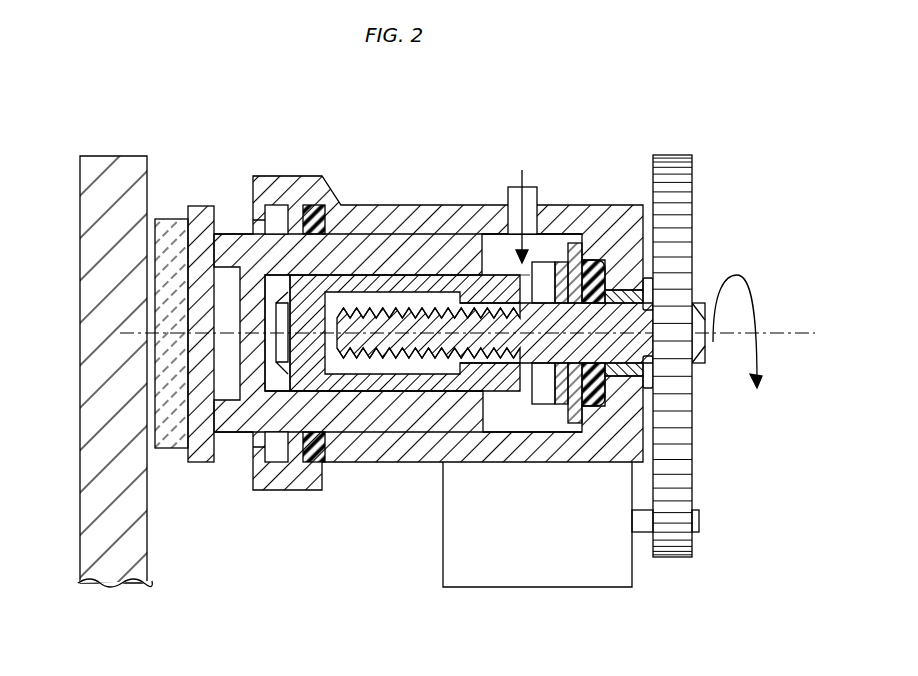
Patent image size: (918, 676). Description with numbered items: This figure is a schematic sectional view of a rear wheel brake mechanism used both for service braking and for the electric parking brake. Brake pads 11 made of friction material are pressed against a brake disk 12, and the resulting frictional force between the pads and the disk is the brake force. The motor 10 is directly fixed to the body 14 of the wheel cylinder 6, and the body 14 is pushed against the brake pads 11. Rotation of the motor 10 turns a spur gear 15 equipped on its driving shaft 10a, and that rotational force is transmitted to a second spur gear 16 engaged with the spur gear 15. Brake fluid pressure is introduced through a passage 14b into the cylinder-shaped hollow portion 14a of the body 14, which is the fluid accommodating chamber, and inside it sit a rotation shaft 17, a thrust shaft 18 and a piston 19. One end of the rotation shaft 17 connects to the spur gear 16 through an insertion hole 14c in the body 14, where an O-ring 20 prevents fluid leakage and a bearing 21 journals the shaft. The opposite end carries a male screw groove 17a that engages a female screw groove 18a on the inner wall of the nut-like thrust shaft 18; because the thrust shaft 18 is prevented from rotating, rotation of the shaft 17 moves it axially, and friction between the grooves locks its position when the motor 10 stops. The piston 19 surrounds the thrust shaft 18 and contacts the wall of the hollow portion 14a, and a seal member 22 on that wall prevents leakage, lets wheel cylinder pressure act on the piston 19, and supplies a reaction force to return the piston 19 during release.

The wheel cylinder 6 is at (420, 192).
The motor 10 is at (510, 588).
The driving shaft 10a is at (642, 532).
The brake pads 11 is at (170, 452).
The brake disk 12 is at (80, 440).
The body 14 is at (455, 228).
The hollow portion 14a is at (497, 255).
The passage 14b is at (535, 230).
The insertion hole 14c is at (648, 300).
The spur gear 15 is at (693, 540).
The spur gear 16 is at (695, 190).
The rotation shaft 17 is at (655, 321).
The male screw groove 17a is at (430, 356).
The thrust shaft 18 is at (380, 392).
The female screw groove 18a is at (490, 380).
The piston 19 is at (345, 425).
The O-ring 20 is at (597, 405).
The bearing 21 is at (600, 420).
The seal member 22 is at (322, 464).